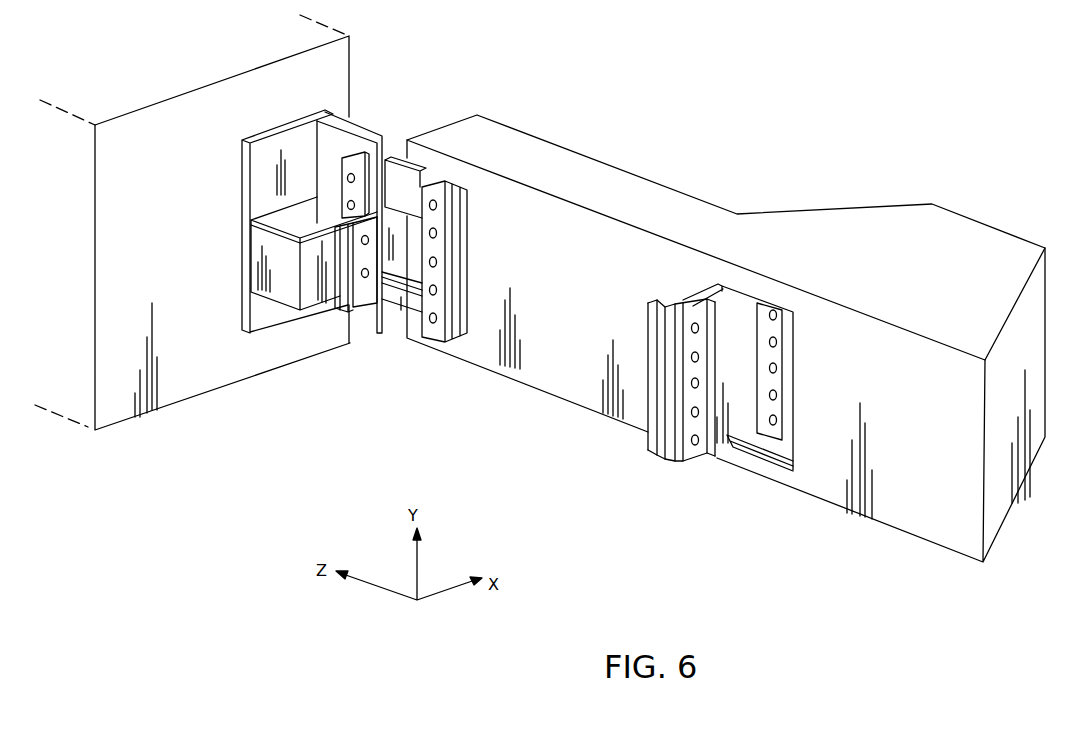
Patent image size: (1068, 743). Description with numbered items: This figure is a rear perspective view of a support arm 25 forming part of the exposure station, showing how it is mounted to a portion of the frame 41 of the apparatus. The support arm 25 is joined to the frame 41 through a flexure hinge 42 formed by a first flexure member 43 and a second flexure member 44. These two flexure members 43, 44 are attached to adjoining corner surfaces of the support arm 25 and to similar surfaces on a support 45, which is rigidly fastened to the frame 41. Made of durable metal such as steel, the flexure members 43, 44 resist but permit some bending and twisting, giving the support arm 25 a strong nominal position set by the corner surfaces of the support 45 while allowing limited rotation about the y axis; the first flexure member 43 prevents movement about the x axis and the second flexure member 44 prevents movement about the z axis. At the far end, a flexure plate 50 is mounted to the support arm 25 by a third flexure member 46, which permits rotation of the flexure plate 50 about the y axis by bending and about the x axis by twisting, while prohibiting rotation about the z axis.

The support arm 25 is at (628, 197).
The frame 41 is at (192, 133).
The flexure hinge 42 is at (399, 132).
The first flexure member 43 is at (412, 185).
The second flexure member 44 is at (338, 271).
The support 45 is at (250, 272).
The third flexure member 46 is at (715, 398).
The flexure plate 50 is at (763, 448).